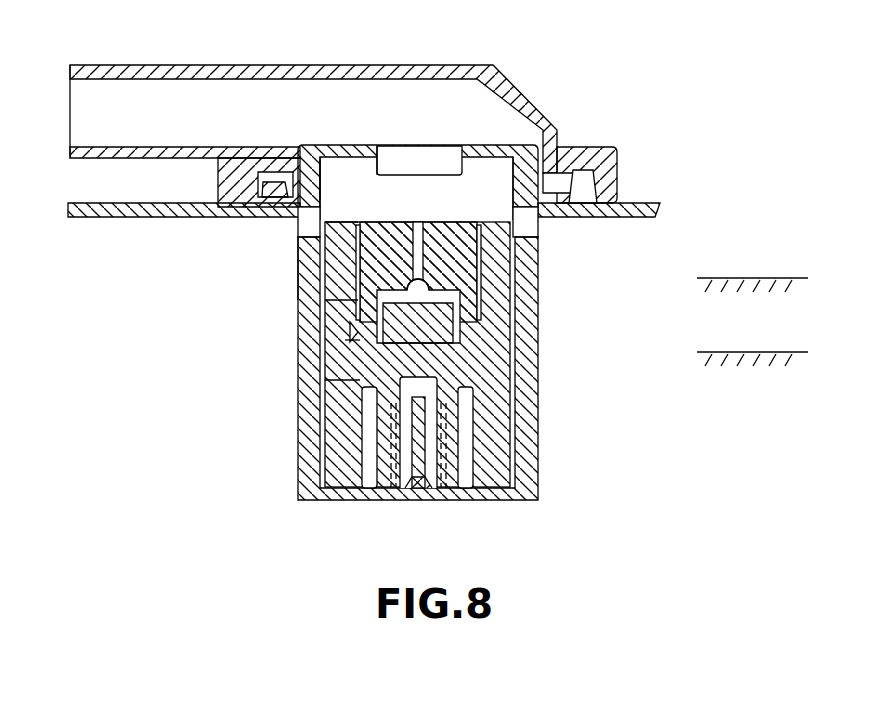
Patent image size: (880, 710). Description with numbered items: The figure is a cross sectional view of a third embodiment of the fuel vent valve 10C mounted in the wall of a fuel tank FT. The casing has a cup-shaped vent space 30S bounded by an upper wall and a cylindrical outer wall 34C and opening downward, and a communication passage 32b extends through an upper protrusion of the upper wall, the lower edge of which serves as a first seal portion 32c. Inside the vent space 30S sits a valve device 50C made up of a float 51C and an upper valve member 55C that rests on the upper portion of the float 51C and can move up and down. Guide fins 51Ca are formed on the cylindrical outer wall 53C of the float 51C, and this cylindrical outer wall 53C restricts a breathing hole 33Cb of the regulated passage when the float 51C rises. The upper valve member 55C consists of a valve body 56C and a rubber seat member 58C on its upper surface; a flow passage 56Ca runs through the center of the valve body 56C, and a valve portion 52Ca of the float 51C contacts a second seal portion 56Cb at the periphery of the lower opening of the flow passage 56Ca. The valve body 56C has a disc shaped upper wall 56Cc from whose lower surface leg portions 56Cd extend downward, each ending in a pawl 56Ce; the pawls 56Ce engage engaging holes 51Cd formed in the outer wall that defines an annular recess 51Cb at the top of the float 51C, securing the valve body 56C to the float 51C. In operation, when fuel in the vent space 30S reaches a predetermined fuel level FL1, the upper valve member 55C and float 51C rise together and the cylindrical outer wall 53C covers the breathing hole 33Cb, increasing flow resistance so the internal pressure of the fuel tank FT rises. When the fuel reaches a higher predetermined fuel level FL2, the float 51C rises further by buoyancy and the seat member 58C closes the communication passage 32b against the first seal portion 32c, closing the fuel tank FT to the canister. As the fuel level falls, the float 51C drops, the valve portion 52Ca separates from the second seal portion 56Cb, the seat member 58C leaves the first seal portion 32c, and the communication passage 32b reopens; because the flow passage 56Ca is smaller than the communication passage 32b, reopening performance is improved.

The case 10C is at (528, 68).
The rubber seat member 58C is at (528, 140).
The fuel tank FT is at (640, 205).
The cylindrical outer wall 53C is at (296, 158).
The communication passage 32b is at (418, 155).
The first seal portion 32c is at (374, 157).
The vent space 30S is at (345, 170).
The disc shaped upper wall 56Cc is at (330, 177).
The breathing hole 33Cb is at (296, 229).
The guide fins 51Ca is at (513, 400).
The float 51C is at (515, 330).
The valve body 56C is at (535, 243).
The upper valve member 55C is at (487, 262).
The valve device 50C is at (608, 270).
The valve portion 52Ca is at (318, 453).
The side wall 34C is at (294, 250).
The flow passage 56Ca is at (335, 268).
The second seal portion 56Cb is at (340, 292).
The engaging holes 51Cd is at (350, 332).
The pawl 56Ce is at (350, 346).
The leg portions 56Cd is at (413, 300).
The annular recess 51Cb is at (352, 385).
The predetermined fuel level FL2 is at (755, 278).
The predetermined fuel level FL1 is at (755, 352).